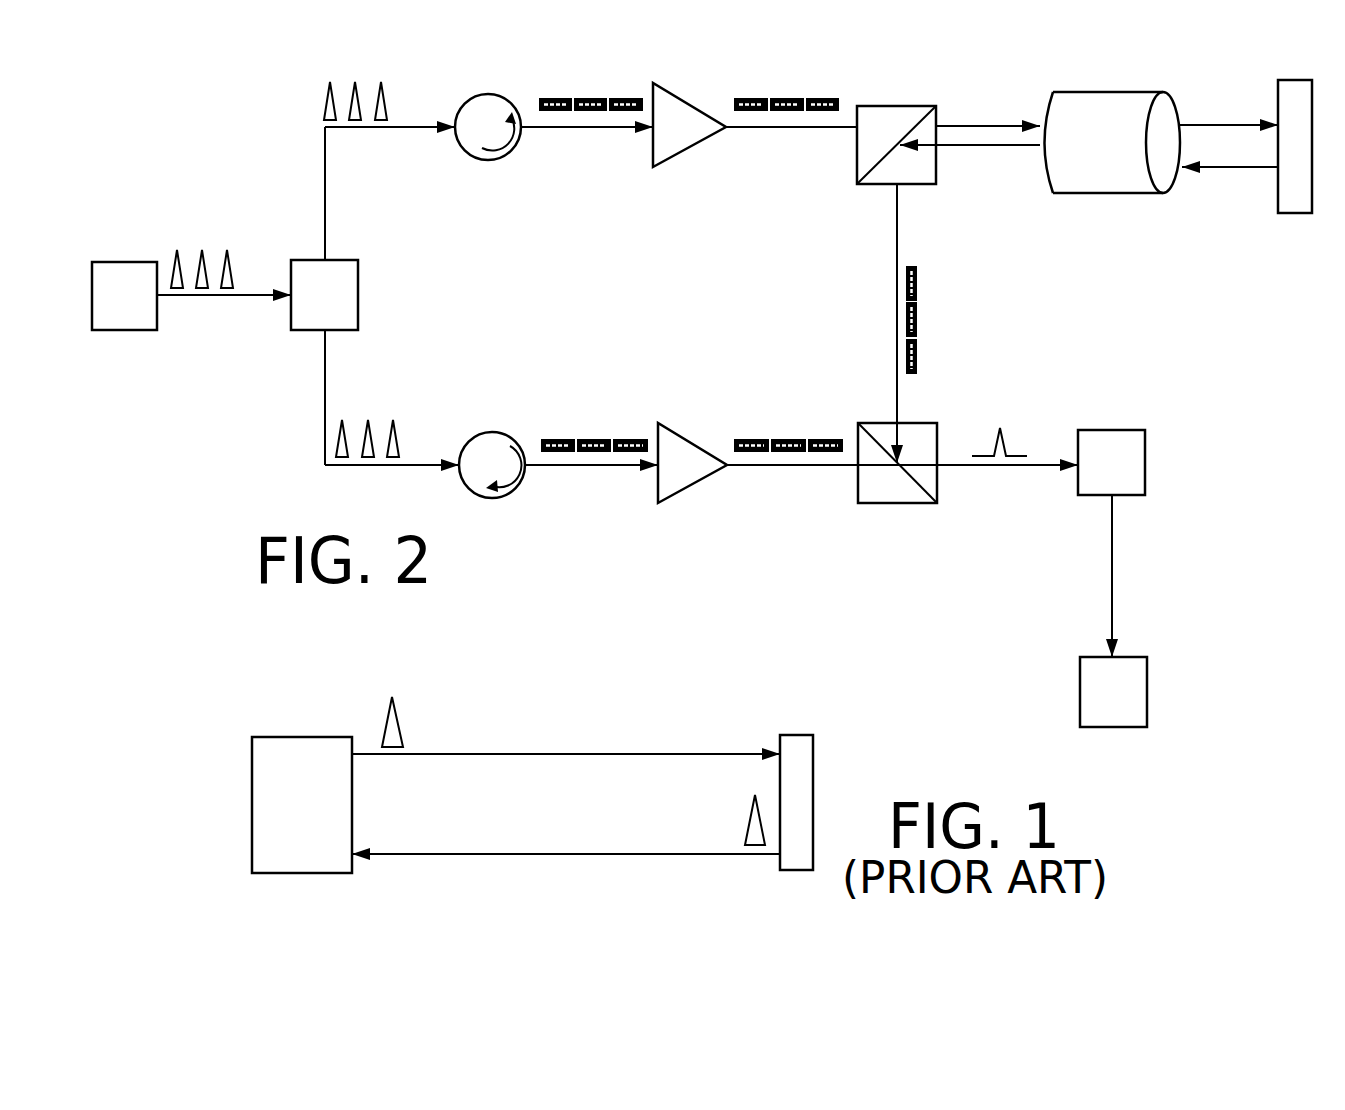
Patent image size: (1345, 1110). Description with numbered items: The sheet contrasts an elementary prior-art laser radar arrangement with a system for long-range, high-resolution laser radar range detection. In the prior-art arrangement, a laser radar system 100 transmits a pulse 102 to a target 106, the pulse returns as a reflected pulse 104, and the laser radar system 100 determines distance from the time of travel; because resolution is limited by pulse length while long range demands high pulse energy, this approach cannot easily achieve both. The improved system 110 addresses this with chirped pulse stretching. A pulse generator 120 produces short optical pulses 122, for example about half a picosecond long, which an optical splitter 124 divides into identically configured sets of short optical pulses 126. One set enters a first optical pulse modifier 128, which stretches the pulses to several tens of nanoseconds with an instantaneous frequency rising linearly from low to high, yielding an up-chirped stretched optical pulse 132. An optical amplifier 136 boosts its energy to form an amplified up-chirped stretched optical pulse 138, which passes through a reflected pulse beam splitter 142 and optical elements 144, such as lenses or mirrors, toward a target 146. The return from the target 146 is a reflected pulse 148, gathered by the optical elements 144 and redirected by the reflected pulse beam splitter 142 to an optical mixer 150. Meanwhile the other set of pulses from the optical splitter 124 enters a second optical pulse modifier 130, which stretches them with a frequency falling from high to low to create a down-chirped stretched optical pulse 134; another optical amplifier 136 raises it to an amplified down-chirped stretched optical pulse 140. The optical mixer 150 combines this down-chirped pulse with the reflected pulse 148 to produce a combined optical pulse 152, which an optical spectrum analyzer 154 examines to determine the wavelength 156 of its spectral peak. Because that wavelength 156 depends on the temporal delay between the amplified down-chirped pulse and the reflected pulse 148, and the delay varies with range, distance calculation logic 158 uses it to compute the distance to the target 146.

In FIG. 1, the laser radar system 100 is at (283, 737).
In FIG. 1, the pulse 102 is at (387, 705).
In FIG. 1, the reflected pulse 104 is at (750, 810).
In FIG. 1, the target 106 is at (800, 735).
In FIG. 2, the system 110 is at (955, 58).
In FIG. 2, the pulse generator 120 is at (97, 260).
In FIG. 2, the short optical pulses 122 is at (167, 258).
In FIG. 2, the optical splitter 124 is at (343, 260).
In FIG. 2, the sets of short optical pulses 126 is at (373, 92).
In FIG. 2, the first optical pulse modifier 128 is at (480, 92).
In FIG. 2, the second optical pulse modifier 130 is at (478, 423).
In FIG. 2, the up-chirped stretched optical pulse 132 is at (592, 100).
In FIG. 2, the down-chirped stretched optical pulse 134 is at (577, 440).
In FIG. 2, the optical amplifier 136 is at (673, 95).
In FIG. 2, the amplified up-chirped stretched optical pulse 138 is at (793, 100).
In FIG. 2, the amplified down-chirped stretched optical pulse 140 is at (772, 440).
In FIG. 2, the reflected pulse beam splitter 142 is at (880, 106).
In FIG. 2, the optical elements 144 is at (1100, 92).
In FIG. 2, the target 146 is at (1298, 80).
In FIG. 2, the reflected pulse 148 is at (1250, 168).
In FIG. 2, the optical mixer 150 is at (923, 423).
In FIG. 2, the combined optical pulse 152 is at (992, 430).
In FIG. 2, the optical spectrum analyzer 154 is at (1110, 430).
In FIG. 2, the wavelength 156 is at (1114, 566).
In FIG. 2, the distance calculation logic 158 is at (1147, 693).